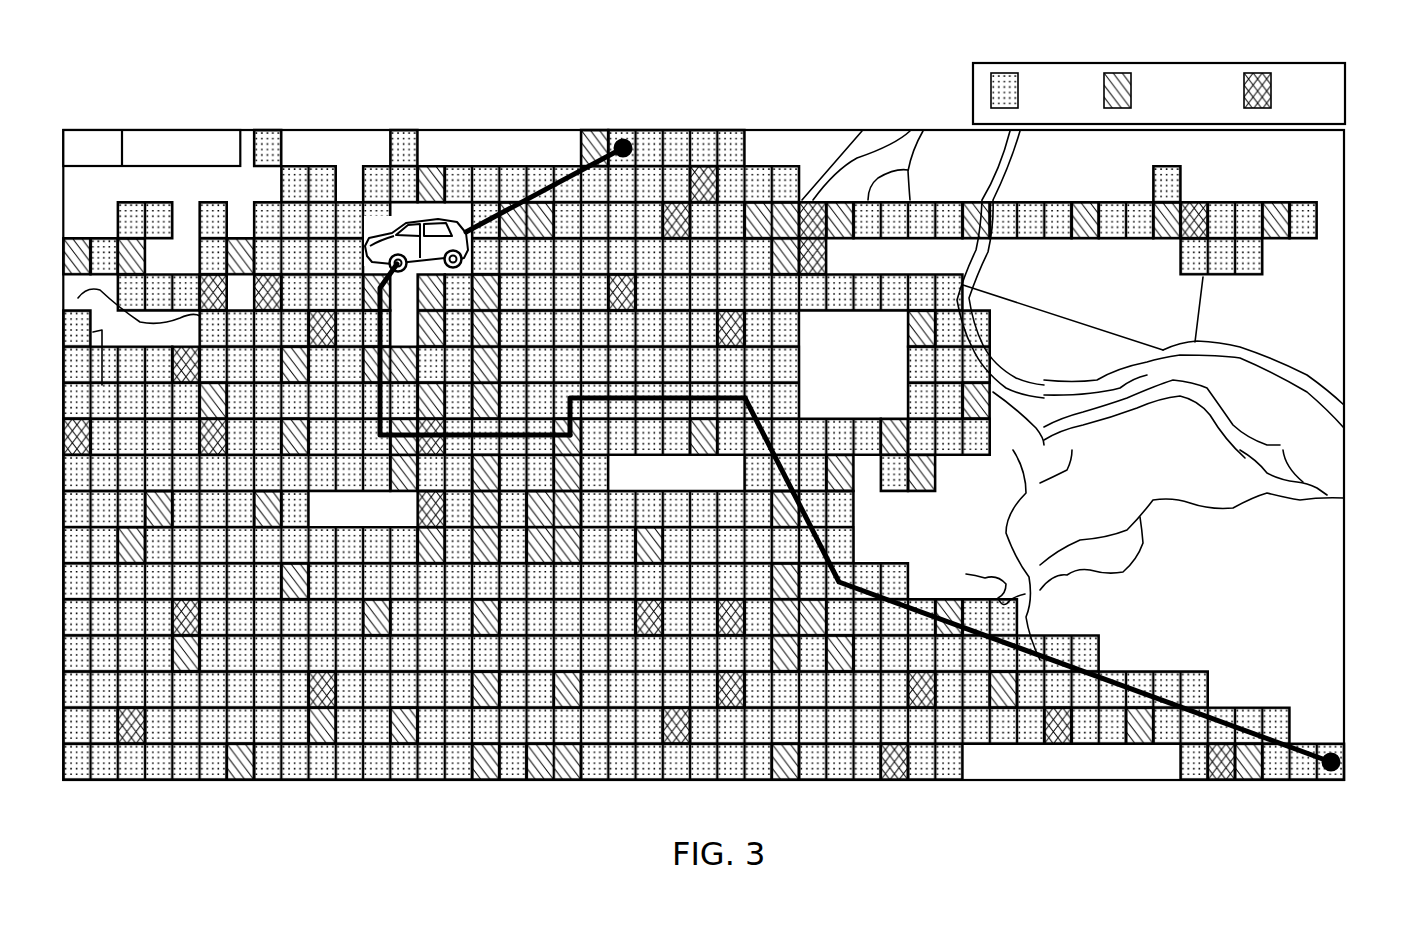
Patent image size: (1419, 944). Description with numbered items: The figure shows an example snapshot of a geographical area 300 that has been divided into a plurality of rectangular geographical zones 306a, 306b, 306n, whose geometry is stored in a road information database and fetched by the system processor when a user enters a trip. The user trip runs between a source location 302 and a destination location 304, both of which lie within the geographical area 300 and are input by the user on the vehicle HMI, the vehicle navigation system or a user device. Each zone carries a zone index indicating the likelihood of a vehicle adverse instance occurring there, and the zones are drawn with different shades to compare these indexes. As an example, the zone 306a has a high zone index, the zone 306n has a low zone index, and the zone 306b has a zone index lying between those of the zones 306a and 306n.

The geographical area 300 is at (150, 86).
The source location 302 is at (622, 141).
The destination location 304 is at (1338, 762).
The geographical zone 306a is at (428, 437).
The geographical zone 306b is at (585, 440).
The geographical zone 306n is at (730, 394).